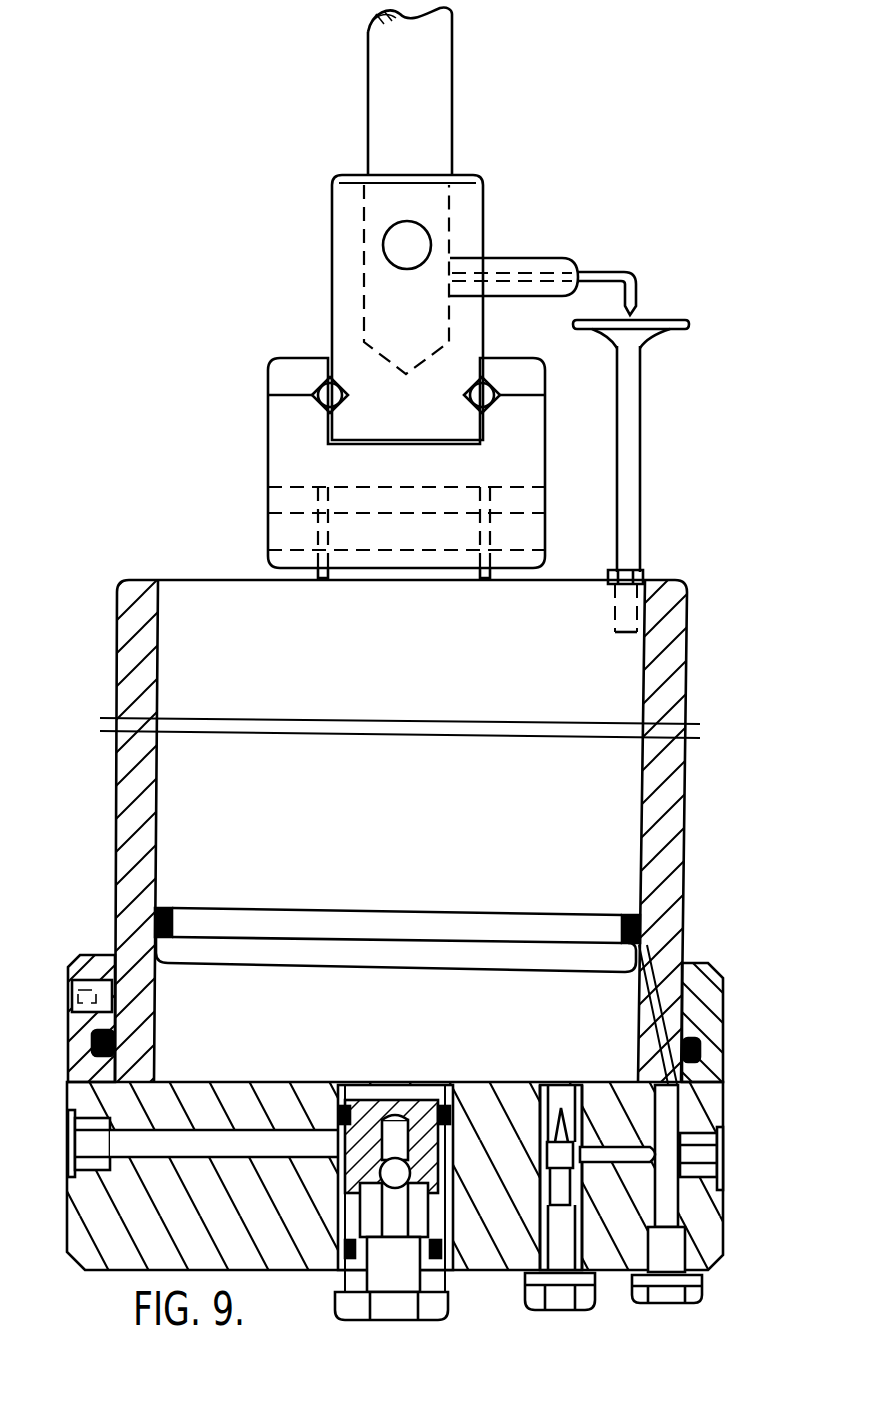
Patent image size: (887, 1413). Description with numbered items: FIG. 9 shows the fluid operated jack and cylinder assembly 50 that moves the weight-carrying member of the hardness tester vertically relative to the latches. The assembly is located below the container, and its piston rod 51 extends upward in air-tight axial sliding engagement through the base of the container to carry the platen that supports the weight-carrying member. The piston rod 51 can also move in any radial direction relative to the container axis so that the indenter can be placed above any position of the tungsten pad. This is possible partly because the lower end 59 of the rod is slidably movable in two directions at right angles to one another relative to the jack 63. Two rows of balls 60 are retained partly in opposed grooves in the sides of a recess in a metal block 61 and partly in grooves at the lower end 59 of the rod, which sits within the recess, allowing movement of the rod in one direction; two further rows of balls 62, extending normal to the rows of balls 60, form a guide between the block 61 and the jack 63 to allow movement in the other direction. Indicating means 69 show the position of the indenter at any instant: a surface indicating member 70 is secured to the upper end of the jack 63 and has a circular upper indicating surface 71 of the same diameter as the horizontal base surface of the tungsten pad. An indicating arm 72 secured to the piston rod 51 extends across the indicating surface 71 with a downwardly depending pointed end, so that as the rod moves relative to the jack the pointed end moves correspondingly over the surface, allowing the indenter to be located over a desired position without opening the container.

The jack and cylinder assembly 50 is at (521, 811).
The piston rod 51 is at (406, 106).
The lower end of the piston rod 59 is at (350, 290).
The rows of balls 60 is at (325, 388).
The metal block 61 is at (527, 390).
The rows of balls 62 is at (520, 514).
The jack 63 is at (326, 577).
The indicating means 69 is at (622, 240).
The surface indicating member 70 is at (632, 352).
The indicating surface 71 is at (648, 318).
The indicating arm 72 is at (622, 272).